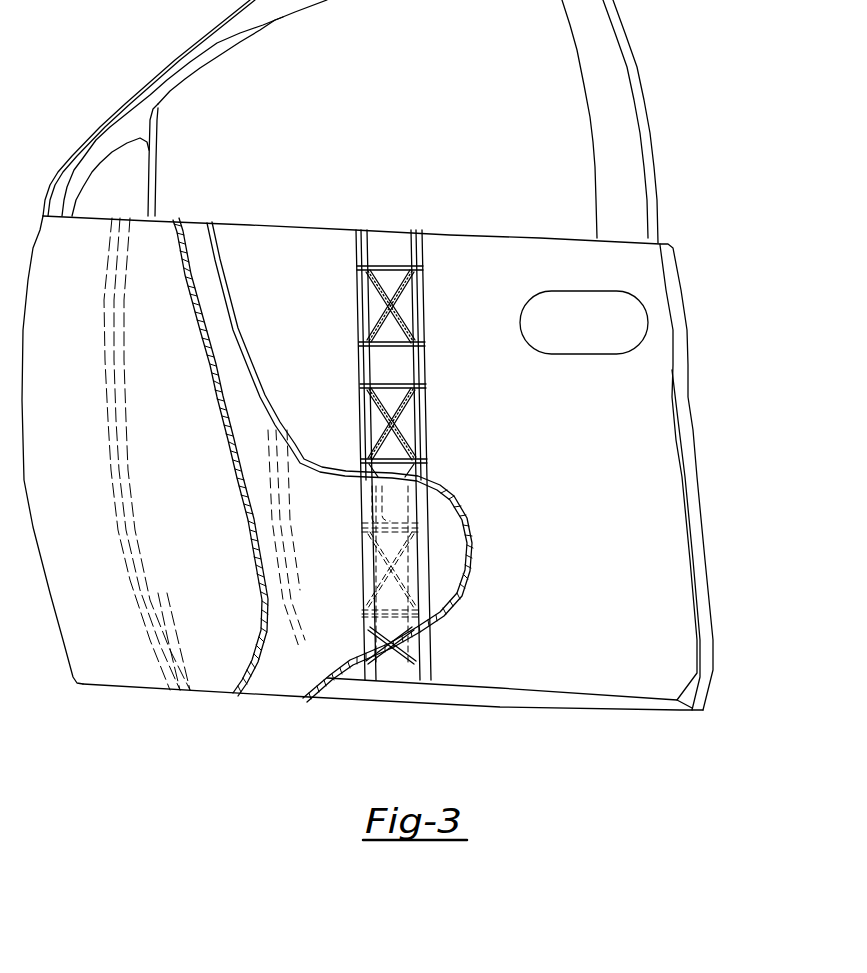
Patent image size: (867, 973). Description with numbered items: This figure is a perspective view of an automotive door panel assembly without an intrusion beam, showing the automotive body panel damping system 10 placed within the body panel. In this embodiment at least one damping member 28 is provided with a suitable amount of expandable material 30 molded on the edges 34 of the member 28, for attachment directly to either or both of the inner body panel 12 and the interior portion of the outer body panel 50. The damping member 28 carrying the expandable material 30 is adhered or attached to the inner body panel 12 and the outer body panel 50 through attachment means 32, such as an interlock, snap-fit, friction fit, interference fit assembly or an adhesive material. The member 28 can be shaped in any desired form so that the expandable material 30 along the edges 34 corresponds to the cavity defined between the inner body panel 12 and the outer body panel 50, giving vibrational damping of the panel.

The automotive body panel damping system 10 is at (712, 296).
The inner body panel 12 is at (625, 560).
The damping member 28 is at (400, 372).
The expandable material 30 is at (403, 407).
The attachment means 32 is at (366, 530).
The edges of the damping member 34 is at (403, 295).
The outer body panel 50 is at (220, 348).